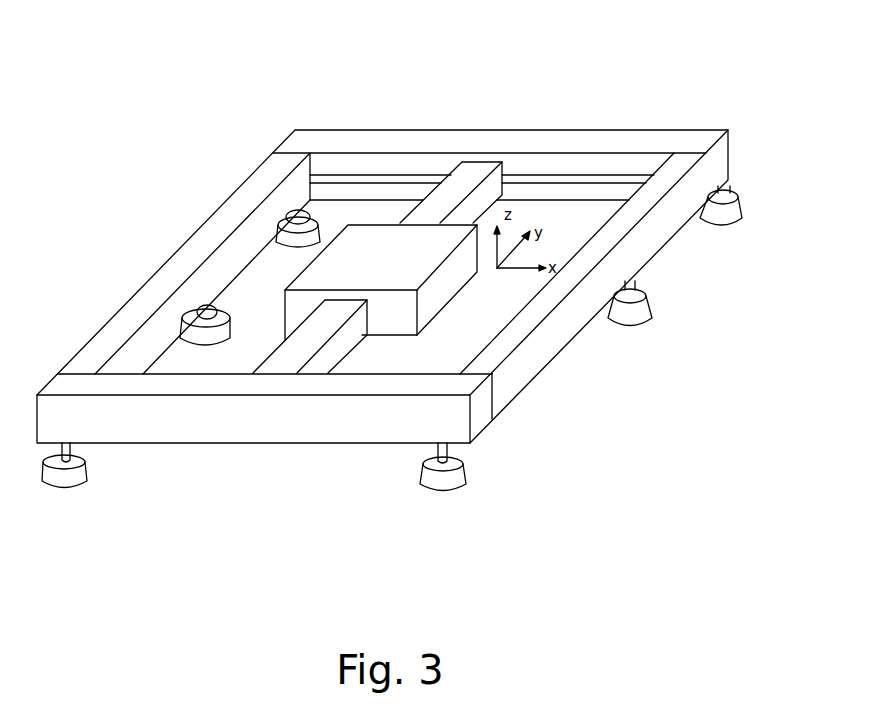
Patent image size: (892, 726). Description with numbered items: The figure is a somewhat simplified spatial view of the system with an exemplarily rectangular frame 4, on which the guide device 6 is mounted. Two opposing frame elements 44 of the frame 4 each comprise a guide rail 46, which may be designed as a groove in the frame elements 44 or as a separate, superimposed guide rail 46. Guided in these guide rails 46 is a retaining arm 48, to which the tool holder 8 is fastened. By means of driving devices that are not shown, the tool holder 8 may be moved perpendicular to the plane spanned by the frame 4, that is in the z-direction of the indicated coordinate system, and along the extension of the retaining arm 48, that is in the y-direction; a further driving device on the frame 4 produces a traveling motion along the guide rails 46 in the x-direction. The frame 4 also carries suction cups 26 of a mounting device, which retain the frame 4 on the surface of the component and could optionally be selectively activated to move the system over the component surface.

The frame 4 is at (392, 272).
The frame elements 44 is at (592, 145).
The guide rail 46 is at (337, 178).
The guide device 6 is at (469, 172).
The tool holder 8 is at (318, 283).
The retaining arm 48 is at (297, 352).
The suction cups 26 is at (193, 338).